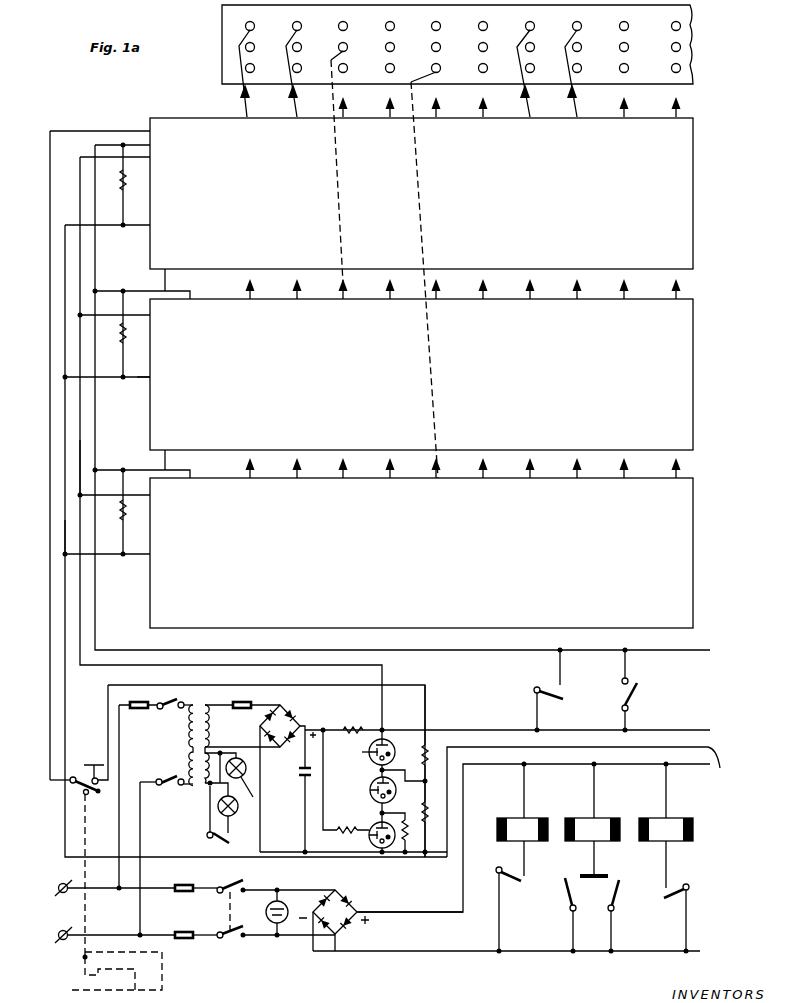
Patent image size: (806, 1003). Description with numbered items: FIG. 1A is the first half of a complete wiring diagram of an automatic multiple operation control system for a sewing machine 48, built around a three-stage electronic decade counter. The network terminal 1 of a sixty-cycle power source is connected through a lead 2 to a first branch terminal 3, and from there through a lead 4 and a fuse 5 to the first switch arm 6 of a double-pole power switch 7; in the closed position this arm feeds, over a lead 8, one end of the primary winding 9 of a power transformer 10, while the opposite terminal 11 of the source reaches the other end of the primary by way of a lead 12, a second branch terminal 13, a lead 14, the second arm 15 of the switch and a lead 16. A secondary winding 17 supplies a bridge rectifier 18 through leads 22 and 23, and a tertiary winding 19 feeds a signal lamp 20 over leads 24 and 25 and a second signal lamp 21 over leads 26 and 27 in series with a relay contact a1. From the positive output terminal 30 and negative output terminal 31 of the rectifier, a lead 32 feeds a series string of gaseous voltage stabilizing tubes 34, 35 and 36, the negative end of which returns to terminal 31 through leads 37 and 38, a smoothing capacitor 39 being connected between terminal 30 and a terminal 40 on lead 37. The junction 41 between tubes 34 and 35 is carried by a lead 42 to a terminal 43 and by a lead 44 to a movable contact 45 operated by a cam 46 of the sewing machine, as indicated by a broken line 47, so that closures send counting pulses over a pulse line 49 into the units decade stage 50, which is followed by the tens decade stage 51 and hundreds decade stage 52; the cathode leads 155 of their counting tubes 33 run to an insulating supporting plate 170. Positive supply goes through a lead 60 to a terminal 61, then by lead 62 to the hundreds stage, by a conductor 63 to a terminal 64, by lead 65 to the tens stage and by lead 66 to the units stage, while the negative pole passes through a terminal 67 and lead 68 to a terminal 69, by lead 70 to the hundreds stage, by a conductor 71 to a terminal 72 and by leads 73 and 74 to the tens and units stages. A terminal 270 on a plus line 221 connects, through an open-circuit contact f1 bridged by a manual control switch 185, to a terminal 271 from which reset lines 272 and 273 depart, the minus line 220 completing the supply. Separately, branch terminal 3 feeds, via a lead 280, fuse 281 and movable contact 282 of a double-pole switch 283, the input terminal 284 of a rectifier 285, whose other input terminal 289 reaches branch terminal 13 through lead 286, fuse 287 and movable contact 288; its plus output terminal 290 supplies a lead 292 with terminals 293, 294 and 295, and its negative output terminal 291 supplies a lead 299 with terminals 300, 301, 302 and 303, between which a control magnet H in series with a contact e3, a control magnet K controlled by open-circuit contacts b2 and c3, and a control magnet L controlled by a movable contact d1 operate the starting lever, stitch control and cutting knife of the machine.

The network terminal 1 is at (63, 880).
The lead 2 is at (100, 887).
The first branch terminal 3 is at (121, 887).
The lead 4 is at (134, 776).
The fuse 5 is at (137, 708).
The first switch arm 6 is at (158, 702).
The double-pole power switch 7 is at (170, 750).
The lead 8 is at (190, 700).
The primary winding 9 is at (194, 727).
The power transformer 10 is at (204, 703).
The opposite terminal 11 is at (65, 926).
The lead 12 is at (111, 933).
The second branch terminal 13 is at (147, 938).
The lead 14 is at (140, 835).
The second arm 15 is at (165, 786).
The lead 16 is at (189, 773).
The secondary winding 17 is at (207, 725).
The rectifier 18 is at (280, 726).
The tertiary winding 19 is at (205, 788).
The signal lamp 20 is at (242, 780).
The signal lamp 21 is at (229, 819).
The lead 22 is at (236, 702).
The lead 23 is at (256, 741).
The lead 24 is at (240, 754).
The lead 25 is at (251, 797).
The lead 26 is at (207, 822).
The lead 27 is at (209, 787).
The output terminal 30 is at (306, 725).
The output terminal 31 is at (262, 718).
The lead 32 is at (338, 726).
The tube 33 is at (385, 730).
The gaseous voltage stabilizing tube 34 is at (365, 753).
The gaseous voltage stabilizing tube 35 is at (371, 793).
The gaseous voltage stabilizing tube 36 is at (370, 832).
The lead 37 is at (324, 832).
The lead 38 is at (262, 805).
The smoothing capacitor 39 is at (304, 772).
The terminal 40 is at (297, 851).
The junction 41 is at (388, 768).
The lead 42 is at (425, 783).
The terminal 43 is at (432, 767).
The lead 44 is at (427, 697).
The movable contact 45 is at (77, 770).
The cam 46 is at (94, 793).
The broken line 47 is at (86, 855).
The sewing machine 48 is at (165, 977).
The pulse line 49 is at (121, 131).
The units decade stage 50 is at (421, 193).
The tens decade stage 51 is at (421, 374).
The hundreds decade stage 52 is at (421, 553).
The lead 60 is at (86, 668).
The terminal 61 is at (82, 497).
The lead 62 is at (107, 494).
The conductor 63 is at (80, 455).
The terminal 64 is at (80, 315).
The lead 65 is at (111, 320).
The lead 66 is at (80, 200).
The terminal 67 is at (424, 860).
The lead 68 is at (286, 858).
The terminal 69 is at (65, 555).
The lead 70 is at (140, 554).
The conductor 71 is at (65, 538).
The terminal 72 is at (66, 378).
The lead 73 is at (138, 380).
The lead 74 is at (66, 278).
The cathode leads 155 is at (687, 103).
The insulating supporting plate 170 is at (217, 68).
The manual control switch 185 is at (642, 692).
The minus line 220 is at (587, 802).
The plus line 221 is at (690, 729).
The terminal 270 is at (535, 729).
The terminal 271 is at (563, 654).
The reset line 272 is at (96, 247).
The reset line 273 is at (650, 651).
The lead 280 is at (157, 886).
The fuse 281 is at (222, 888).
The movable contact 282 is at (235, 882).
The double-pole switch 283 is at (229, 913).
The input terminal 284 is at (340, 893).
The rectifier 285 is at (334, 912).
The lead 286 is at (165, 934).
The fuse 287 is at (186, 940).
The movable contact 288 is at (245, 940).
The input terminal 289 is at (336, 952).
The plus output terminal 290 is at (360, 915).
The negative output terminal 291 is at (312, 916).
The lead 292 is at (445, 913).
The terminal 293 is at (525, 766).
The terminal 294 is at (596, 766).
The terminal 295 is at (668, 766).
The lead 299 is at (410, 952).
The terminal 300 is at (500, 953).
The terminal 301 is at (573, 953).
The terminal 302 is at (611, 953).
The terminal 303 is at (686, 953).
The control magnet H is at (522, 840).
The control magnet K is at (592, 840).
The control magnet L is at (666, 846).
The open-circuit contact f1 is at (548, 710).
The contact a1 is at (217, 846).
The open circuit contact b2 is at (563, 901).
The open circuit contact c3 is at (616, 901).
The movable contact d1 is at (666, 917).
The contact e3 is at (514, 909).